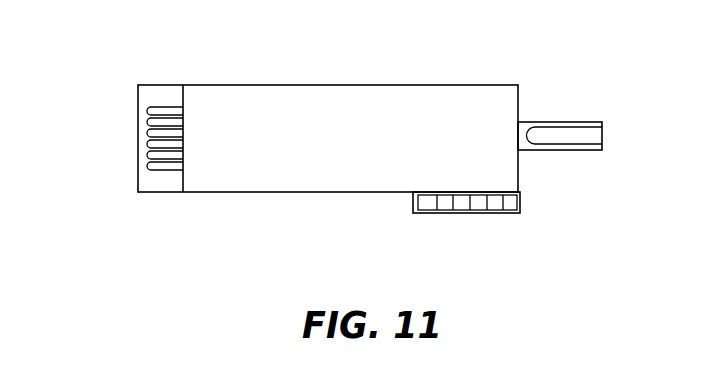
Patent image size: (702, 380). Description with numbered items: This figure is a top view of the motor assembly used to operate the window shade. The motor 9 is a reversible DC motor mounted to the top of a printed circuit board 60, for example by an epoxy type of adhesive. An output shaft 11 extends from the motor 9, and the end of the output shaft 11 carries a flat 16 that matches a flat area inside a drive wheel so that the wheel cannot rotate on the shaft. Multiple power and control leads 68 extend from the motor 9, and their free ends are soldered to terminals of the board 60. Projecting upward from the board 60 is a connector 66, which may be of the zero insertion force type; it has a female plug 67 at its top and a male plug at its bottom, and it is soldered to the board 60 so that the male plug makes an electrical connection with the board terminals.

The motor 9 is at (392, 97).
The output shaft 11 is at (568, 118).
The flat 16 is at (592, 135).
The printed circuit board 60 is at (157, 192).
The connector 66 is at (430, 214).
The female plug 67 is at (525, 199).
The power and control leads 68 is at (138, 102).